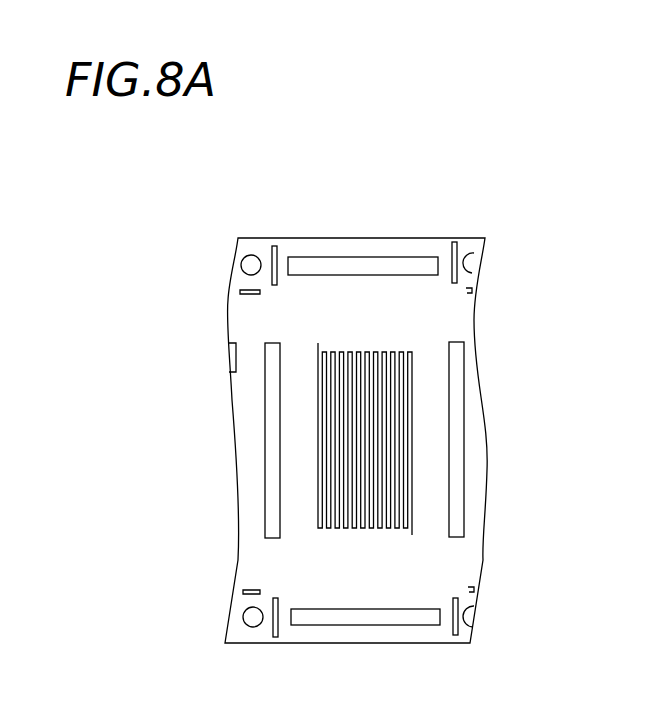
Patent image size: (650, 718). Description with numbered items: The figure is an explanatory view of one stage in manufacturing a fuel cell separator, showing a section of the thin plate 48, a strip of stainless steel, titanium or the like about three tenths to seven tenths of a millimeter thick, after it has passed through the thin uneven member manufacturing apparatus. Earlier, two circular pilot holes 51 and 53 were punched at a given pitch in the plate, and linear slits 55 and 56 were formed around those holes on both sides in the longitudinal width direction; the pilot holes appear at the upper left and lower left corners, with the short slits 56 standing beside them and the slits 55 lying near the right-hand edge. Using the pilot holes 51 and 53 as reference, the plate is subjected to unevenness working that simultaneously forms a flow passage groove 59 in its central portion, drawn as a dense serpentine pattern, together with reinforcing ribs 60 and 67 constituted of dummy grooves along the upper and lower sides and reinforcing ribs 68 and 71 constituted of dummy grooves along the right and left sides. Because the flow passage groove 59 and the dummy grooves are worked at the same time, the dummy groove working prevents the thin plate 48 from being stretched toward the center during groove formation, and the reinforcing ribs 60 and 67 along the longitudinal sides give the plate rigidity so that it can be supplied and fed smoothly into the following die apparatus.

The thin plate 48 is at (446, 236).
The pilot hole 51 is at (243, 258).
The pilot hole 53 is at (244, 616).
The slit 55 is at (458, 250).
The slit 56 is at (270, 245).
The flow passage groove 59 is at (422, 421).
The reinforcing rib 60 is at (410, 262).
The reinforcing rib 67 is at (305, 620).
The reinforcing rib 68 is at (458, 475).
The reinforcing rib 71 is at (270, 515).